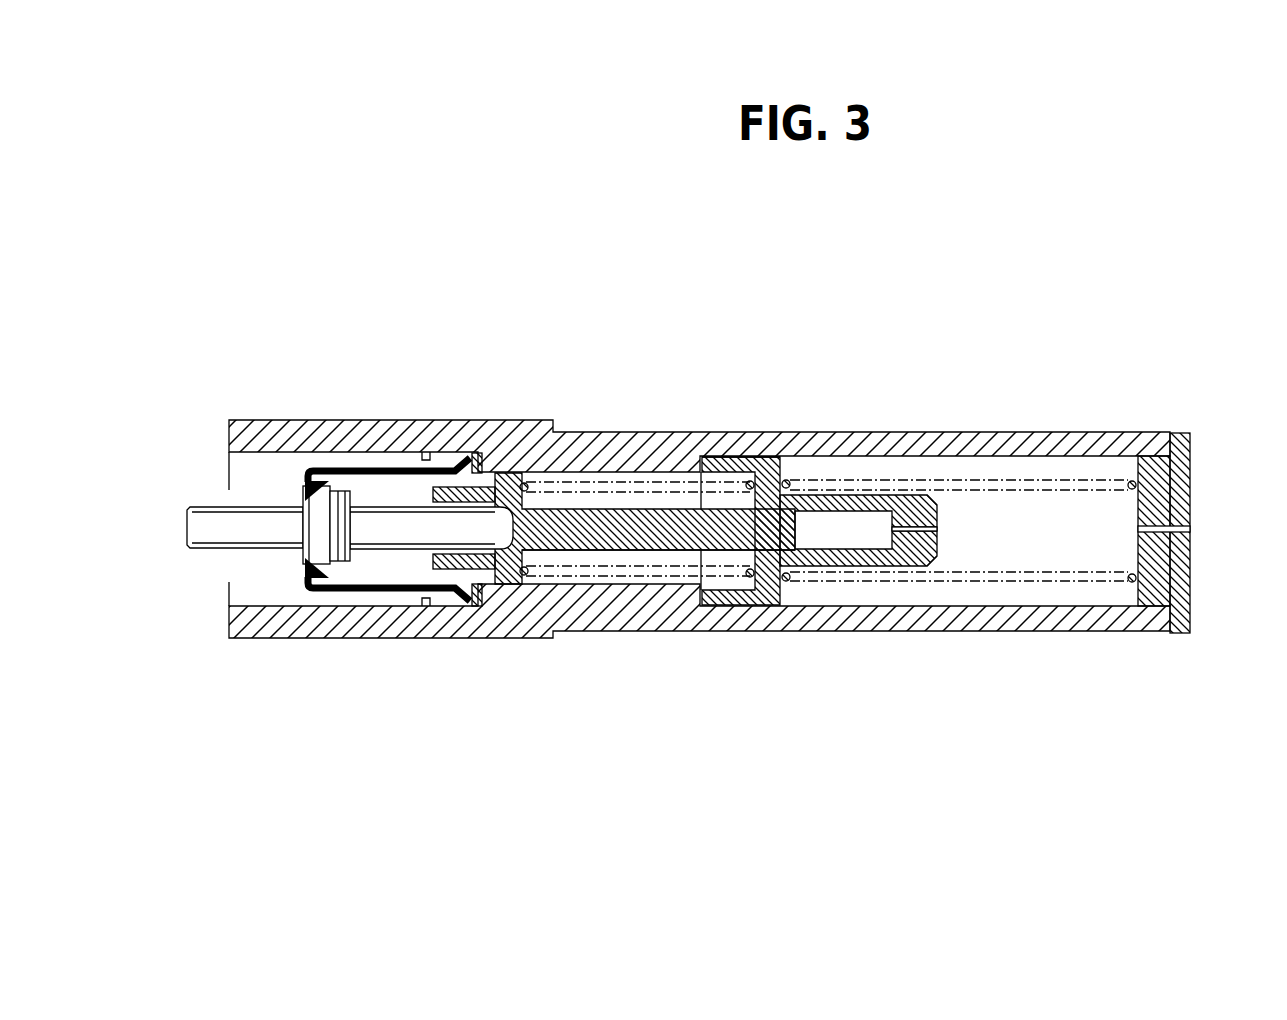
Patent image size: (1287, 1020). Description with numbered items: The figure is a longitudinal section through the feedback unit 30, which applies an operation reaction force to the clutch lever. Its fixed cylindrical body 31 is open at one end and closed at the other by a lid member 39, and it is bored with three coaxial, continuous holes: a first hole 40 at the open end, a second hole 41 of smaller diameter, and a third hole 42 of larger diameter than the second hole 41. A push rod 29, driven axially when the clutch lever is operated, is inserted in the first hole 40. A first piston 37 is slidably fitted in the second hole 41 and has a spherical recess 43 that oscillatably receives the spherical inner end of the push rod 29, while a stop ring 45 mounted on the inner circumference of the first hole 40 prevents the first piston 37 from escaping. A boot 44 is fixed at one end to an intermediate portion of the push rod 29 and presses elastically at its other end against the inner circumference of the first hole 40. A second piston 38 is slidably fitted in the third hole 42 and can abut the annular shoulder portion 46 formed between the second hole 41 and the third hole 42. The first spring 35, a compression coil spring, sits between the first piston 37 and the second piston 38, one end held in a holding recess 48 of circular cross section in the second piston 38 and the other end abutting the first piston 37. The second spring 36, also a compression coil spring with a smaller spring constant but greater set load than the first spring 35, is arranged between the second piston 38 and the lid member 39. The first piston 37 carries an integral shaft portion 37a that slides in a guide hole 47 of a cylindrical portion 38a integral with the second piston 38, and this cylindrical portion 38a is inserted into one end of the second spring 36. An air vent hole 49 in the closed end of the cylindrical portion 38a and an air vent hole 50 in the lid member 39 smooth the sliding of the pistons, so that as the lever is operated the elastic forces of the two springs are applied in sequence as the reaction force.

The push rod 29 is at (208, 523).
The feedback unit 30 is at (831, 429).
The cylindrical body 31 is at (830, 627).
The first spring 35 is at (748, 573).
The second spring 36 is at (1128, 484).
The first piston 37 is at (510, 473).
The shaft portion 37a is at (620, 543).
The second piston 38 is at (766, 458).
The cylindrical portion 38a is at (938, 553).
The lid member 39 is at (1175, 510).
The first hole 40 is at (270, 450).
The second hole 41 is at (576, 488).
The third hole 42 is at (889, 466).
The spherical recess 43 is at (505, 527).
The boot 44 is at (305, 578).
The stop ring 45 is at (476, 486).
The annular shoulder portion 46 is at (740, 457).
The guide hole 47 is at (877, 552).
The holding recess 48 is at (716, 590).
The air vent hole 49 is at (937, 528).
The air vent hole 50 is at (1190, 530).